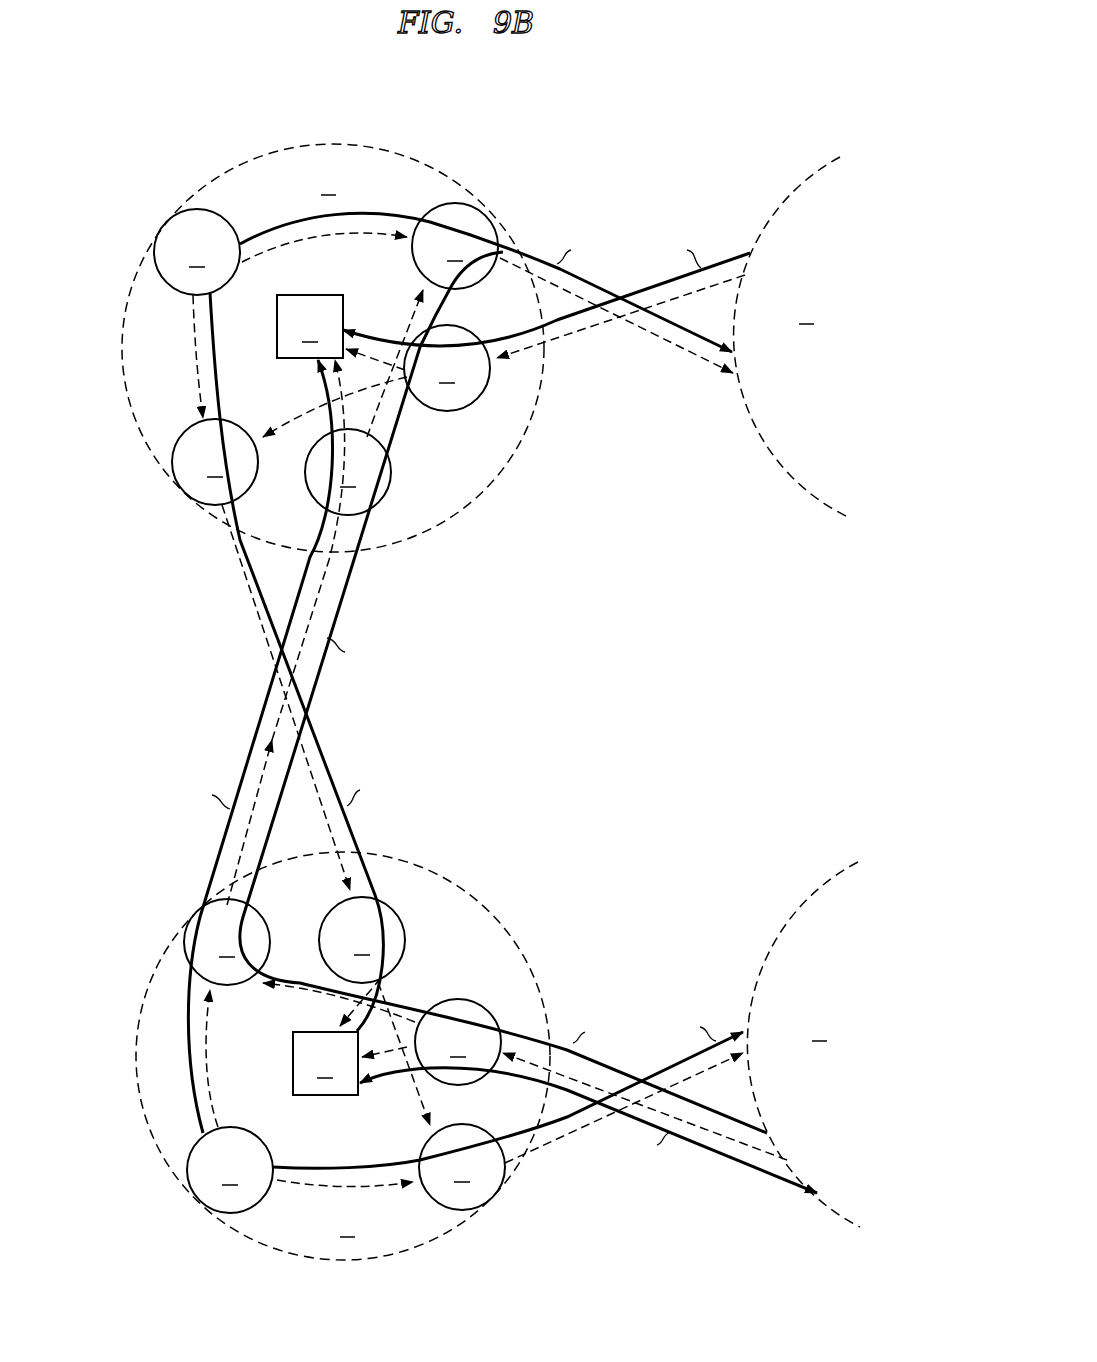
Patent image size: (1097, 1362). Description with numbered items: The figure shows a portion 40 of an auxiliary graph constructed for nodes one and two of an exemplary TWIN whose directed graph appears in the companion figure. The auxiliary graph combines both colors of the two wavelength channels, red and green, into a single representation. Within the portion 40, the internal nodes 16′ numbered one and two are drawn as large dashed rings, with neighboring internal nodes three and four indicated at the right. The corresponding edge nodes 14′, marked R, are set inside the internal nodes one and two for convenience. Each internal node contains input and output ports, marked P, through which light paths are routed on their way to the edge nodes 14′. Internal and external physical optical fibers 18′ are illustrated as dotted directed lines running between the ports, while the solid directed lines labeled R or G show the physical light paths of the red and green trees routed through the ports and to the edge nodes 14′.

The portion of an auxiliary graph 40 is at (88, 698).
The internal nodes 16′ is at (121, 331).
The optical fibers 18′ is at (651, 340).
The edge nodes 14′ is at (277, 319).